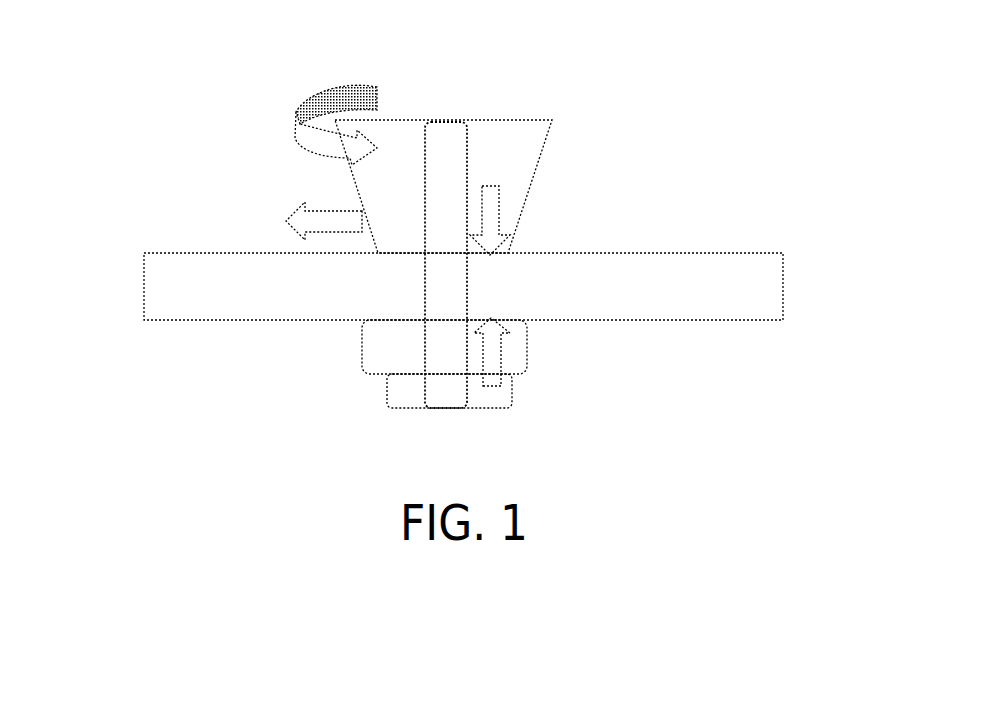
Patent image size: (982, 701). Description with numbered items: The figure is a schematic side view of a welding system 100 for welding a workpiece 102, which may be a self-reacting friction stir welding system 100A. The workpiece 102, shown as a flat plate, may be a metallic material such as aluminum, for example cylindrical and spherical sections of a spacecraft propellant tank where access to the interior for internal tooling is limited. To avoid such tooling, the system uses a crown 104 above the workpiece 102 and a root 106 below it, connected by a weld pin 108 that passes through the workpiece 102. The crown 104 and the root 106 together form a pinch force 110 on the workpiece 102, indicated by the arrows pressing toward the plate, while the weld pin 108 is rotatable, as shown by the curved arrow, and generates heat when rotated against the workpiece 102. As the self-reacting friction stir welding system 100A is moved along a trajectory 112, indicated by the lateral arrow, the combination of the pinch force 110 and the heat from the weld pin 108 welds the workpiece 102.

The welding system 100 is at (143, 86).
The self-reacting friction stir welding system 100A is at (590, 113).
The workpiece 102 is at (175, 253).
The crown 104 is at (535, 234).
The root 106 is at (345, 340).
The weld pin 108 is at (425, 357).
The pinch force 110 is at (520, 353).
The trajectory 112 is at (300, 207).